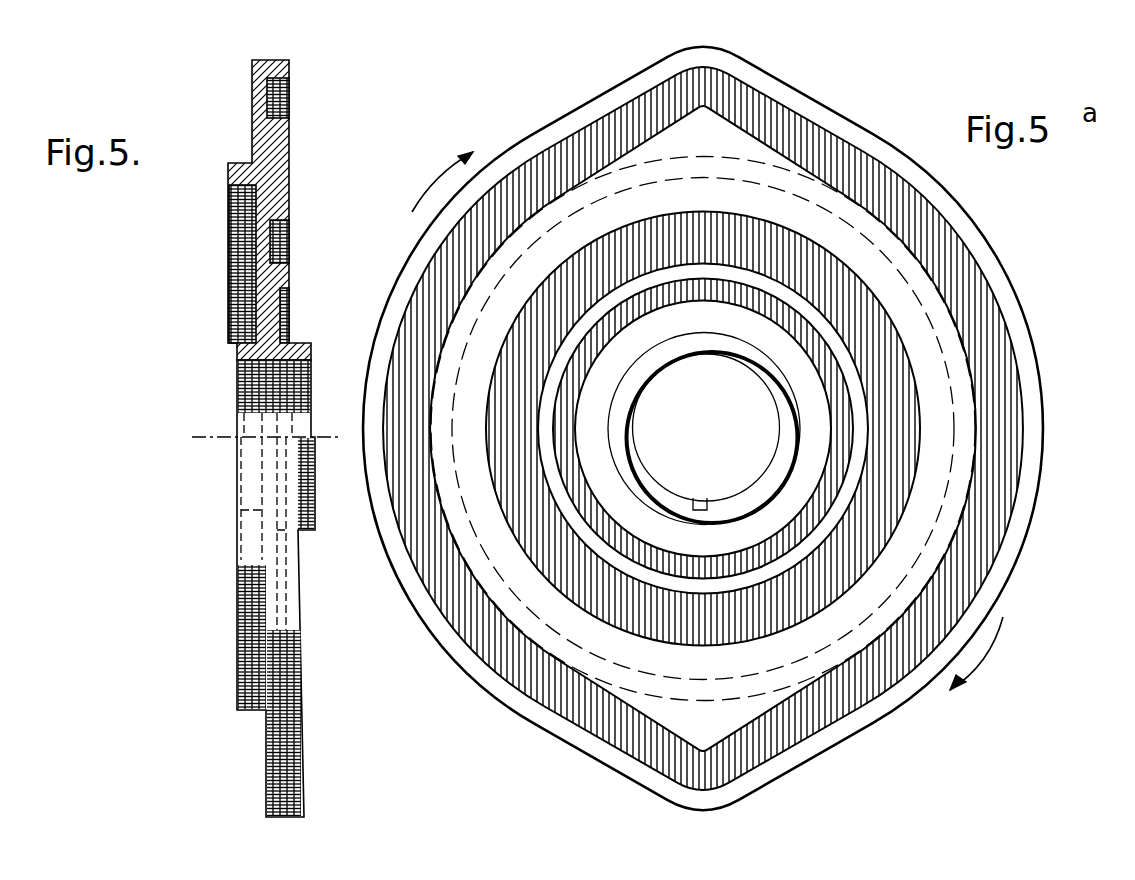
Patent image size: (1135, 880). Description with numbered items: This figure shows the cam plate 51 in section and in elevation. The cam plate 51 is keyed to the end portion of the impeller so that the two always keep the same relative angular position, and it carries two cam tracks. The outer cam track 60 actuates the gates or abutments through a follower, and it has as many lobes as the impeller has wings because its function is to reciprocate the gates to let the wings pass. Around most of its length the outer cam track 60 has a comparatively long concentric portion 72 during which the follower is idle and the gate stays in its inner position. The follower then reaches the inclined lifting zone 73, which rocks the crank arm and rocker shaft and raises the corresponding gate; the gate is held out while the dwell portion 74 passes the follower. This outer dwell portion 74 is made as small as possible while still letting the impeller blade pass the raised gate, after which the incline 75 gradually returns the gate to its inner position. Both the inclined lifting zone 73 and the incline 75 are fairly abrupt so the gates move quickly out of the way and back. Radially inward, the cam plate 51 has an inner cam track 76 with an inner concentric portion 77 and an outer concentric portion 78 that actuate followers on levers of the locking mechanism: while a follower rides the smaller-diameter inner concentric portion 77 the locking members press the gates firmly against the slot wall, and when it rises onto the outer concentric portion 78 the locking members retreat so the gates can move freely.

In FIG. 5, the cam plate 51 is at (290, 62).
In FIG. 5A, the cam plate 51 is at (745, 66).
In FIG. 5, the outer cam track 60 is at (290, 100).
In FIG. 5A, the outer cam track 60 is at (402, 465).
In FIG. 5A, the concentric portion 72 is at (1022, 402).
In FIG. 5A, the inclined lifting zone 73 is at (812, 133).
In FIG. 5A, the dwell portion 74 is at (690, 85).
In FIG. 5A, the incline 75 is at (612, 126).
In FIG. 5, the inner cam track 76 is at (289, 250).
In FIG. 5A, the inner cam track 76 is at (727, 232).
In FIG. 5A, the inner concentric portion 77 is at (875, 317).
In FIG. 5A, the outer concentric portion 78 is at (910, 393).